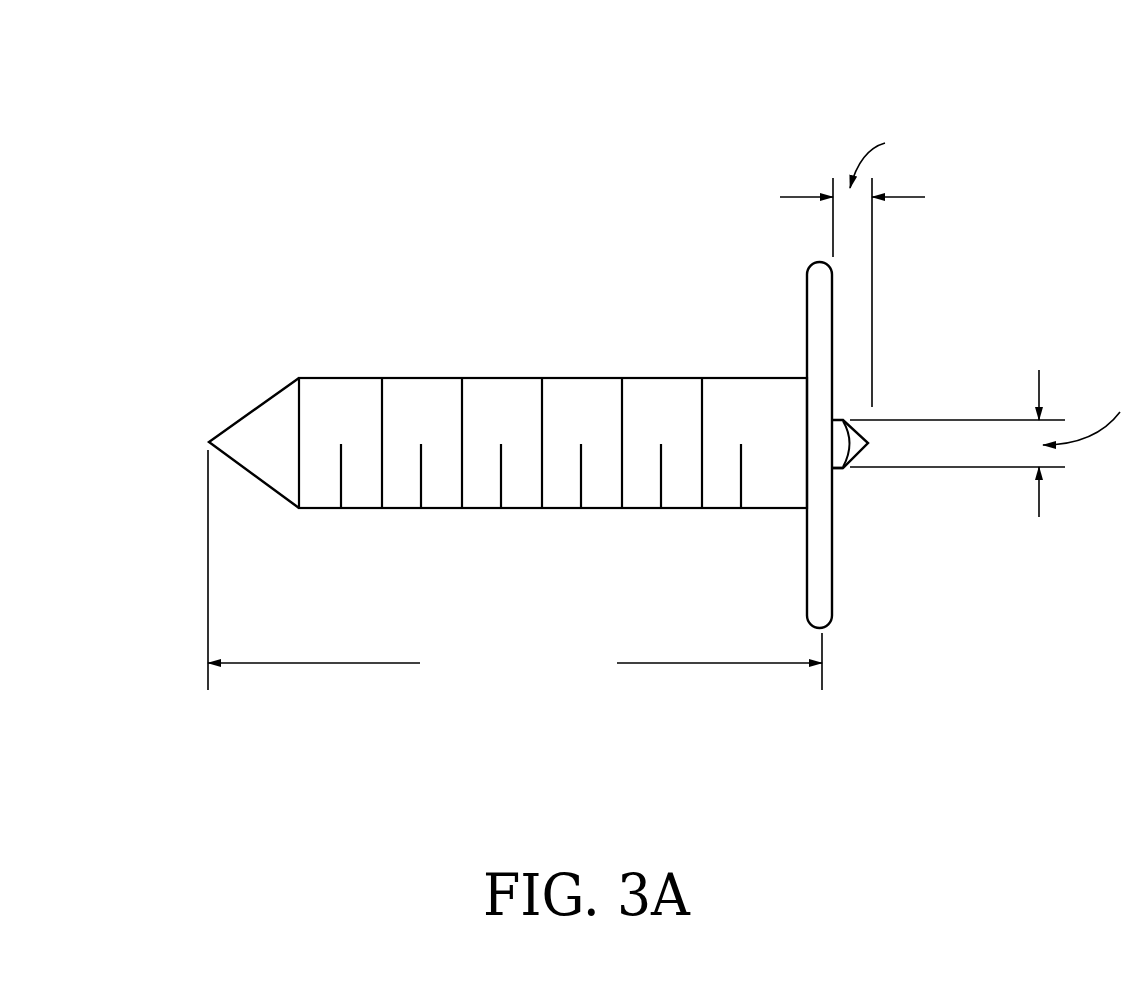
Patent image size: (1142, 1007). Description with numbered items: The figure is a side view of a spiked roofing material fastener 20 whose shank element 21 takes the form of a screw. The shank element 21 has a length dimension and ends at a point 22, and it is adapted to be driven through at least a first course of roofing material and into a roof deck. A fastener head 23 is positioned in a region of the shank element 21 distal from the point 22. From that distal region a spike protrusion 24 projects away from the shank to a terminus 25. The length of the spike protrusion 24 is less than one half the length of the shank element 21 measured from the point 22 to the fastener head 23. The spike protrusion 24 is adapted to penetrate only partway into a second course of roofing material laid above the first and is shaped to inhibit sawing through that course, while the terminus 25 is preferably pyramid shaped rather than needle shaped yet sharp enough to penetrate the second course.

The spiked roofing material fastener 20 is at (640, 172).
The shank element 21 is at (518, 378).
The point 22 is at (209, 442).
The fastener head 23 is at (832, 630).
The spike protrusion 24 is at (838, 470).
The terminus 25 is at (858, 432).